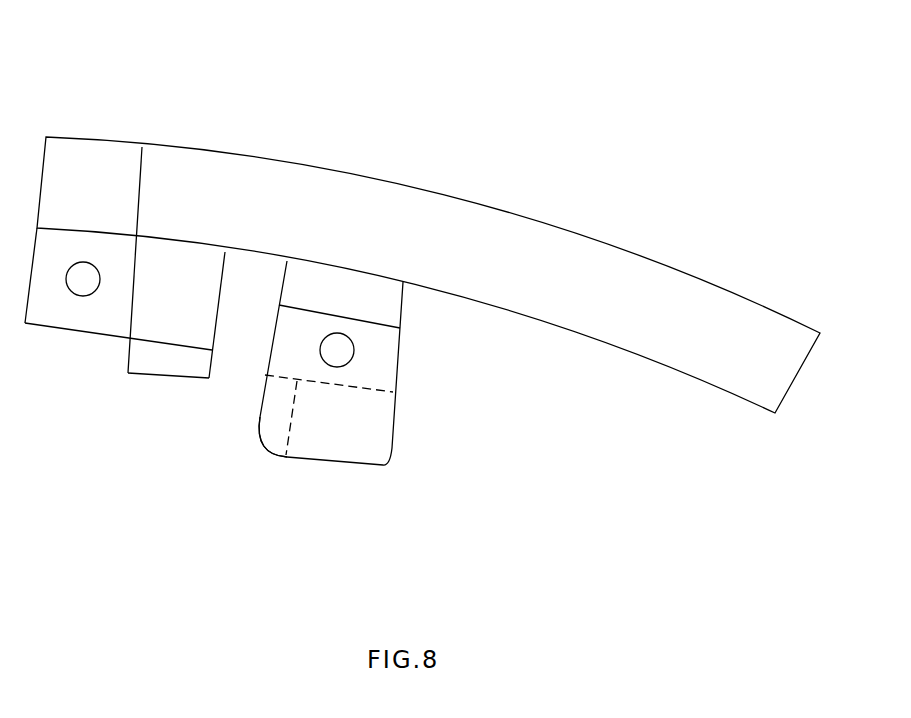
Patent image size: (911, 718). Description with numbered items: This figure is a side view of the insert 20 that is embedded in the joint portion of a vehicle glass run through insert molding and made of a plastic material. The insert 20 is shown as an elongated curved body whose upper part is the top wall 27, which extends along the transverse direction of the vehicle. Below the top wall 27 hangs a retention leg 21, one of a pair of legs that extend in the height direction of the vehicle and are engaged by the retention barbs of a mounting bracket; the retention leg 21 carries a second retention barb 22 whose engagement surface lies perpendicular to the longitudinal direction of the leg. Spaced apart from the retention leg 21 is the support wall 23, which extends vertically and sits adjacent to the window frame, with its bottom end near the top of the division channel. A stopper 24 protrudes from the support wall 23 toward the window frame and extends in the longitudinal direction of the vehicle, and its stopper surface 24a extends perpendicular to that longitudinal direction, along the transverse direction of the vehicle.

The insert 20 is at (81, 48).
The retention leg 21 is at (148, 318).
The second retention barb 22 is at (167, 362).
The support wall 23 is at (387, 348).
The stopper 24 is at (357, 388).
The stopper surface 24a is at (292, 418).
The top wall 27 is at (315, 172).